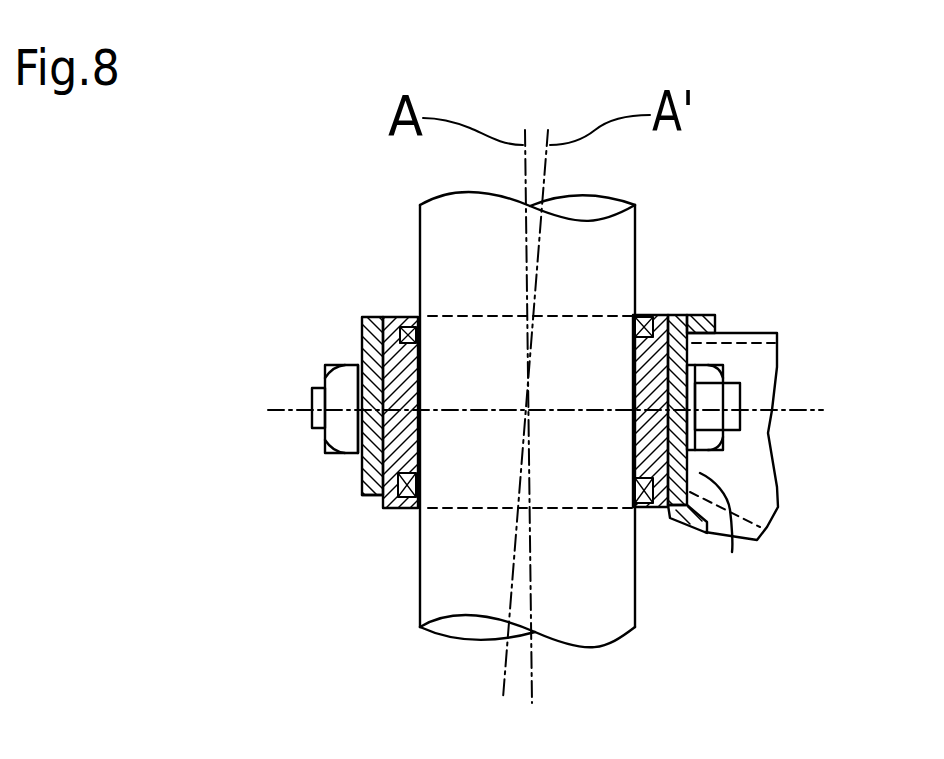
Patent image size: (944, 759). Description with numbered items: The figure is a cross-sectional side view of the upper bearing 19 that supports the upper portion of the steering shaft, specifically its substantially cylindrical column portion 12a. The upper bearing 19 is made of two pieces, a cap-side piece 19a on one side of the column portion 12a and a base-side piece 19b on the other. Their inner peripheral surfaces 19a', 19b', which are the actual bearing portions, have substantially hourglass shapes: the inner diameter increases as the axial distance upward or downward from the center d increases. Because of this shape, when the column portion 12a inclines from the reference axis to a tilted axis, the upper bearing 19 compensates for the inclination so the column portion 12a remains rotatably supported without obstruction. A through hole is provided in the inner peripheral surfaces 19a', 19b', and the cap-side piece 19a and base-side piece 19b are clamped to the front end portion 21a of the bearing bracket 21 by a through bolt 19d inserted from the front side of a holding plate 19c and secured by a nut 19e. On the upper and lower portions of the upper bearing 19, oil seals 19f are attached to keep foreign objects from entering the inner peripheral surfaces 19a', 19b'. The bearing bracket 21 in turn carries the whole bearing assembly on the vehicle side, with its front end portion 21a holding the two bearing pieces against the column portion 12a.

The column portion 12a is at (418, 250).
The upper bearing 19 is at (677, 275).
The cap-side piece 19a is at (311, 372).
The inner peripheral surface 19a' is at (447, 372).
The base-side piece 19b is at (770, 366).
The inner peripheral surface 19b' is at (607, 375).
The holding plate 19c is at (370, 495).
The through bolt 19d is at (318, 430).
The nut 19e is at (723, 447).
The oil seal 19f is at (635, 322).
The bearing bracket 21 is at (745, 333).
The front end portion 21a is at (733, 537).
The center d is at (775, 408).